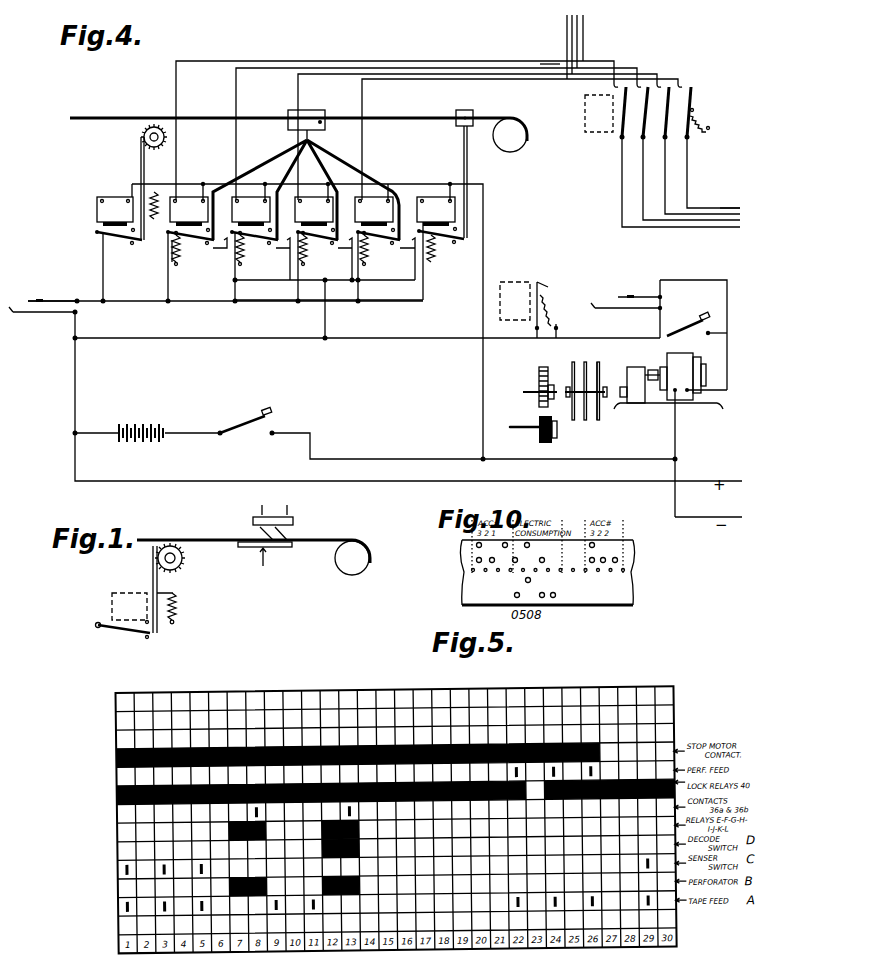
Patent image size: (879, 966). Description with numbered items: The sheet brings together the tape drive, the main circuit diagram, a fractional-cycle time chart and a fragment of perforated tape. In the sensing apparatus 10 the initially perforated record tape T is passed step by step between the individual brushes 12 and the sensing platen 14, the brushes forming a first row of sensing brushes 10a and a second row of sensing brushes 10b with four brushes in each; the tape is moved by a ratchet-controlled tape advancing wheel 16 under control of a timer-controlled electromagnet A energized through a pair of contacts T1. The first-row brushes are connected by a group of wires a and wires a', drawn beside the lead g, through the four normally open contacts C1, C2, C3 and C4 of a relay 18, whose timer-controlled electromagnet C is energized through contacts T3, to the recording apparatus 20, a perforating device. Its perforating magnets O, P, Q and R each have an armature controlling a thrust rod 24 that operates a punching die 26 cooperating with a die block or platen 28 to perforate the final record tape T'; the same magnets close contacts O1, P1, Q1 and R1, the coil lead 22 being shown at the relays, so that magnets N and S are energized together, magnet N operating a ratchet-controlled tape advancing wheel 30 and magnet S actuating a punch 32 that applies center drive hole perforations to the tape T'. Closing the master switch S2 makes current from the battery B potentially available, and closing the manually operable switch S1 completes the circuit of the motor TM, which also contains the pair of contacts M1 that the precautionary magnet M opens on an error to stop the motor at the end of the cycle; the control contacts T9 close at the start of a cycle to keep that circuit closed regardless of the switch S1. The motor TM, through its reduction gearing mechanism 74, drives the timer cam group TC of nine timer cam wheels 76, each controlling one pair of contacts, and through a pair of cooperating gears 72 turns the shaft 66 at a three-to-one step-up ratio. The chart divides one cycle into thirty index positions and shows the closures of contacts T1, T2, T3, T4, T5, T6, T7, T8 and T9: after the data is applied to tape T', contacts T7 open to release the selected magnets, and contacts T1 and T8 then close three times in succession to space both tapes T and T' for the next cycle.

In FIG. 4, the final record tape T' is at (298, 125).
In FIG. 4, the ratchet-controlled tape advancing wheel 30 is at (141, 135).
In FIG. 4, the die block or platen 28 is at (320, 113).
In FIG. 4, the punching die 26 is at (320, 127).
In FIG. 4, the thrust rod 24 is at (335, 160).
In FIG. 4, the punch 32 is at (467, 146).
In FIG. 4, the cable bundle g is at (583, 53).
In FIG. 4, the wires a' is at (539, 50).
In FIG. 4, the group of wires a is at (720, 228).
In FIG. 4, the timer-controlled electromagnet C is at (599, 113).
In FIG. 4, the relay 18 is at (610, 148).
In FIG. 4, the normally open contact C1 is at (680, 157).
In FIG. 4, the normally open contact C2 is at (691, 153).
In FIG. 4, the normally open contact C3 is at (702, 150).
In FIG. 4, the normally open contact C4 is at (713, 147).
In FIG. 4, the magnet N is at (126, 246).
In FIG. 4, the perforating magnet O is at (196, 248).
In FIG. 4, the perforating magnet P is at (260, 248).
In FIG. 4, the perforating magnet Q is at (323, 248).
In FIG. 4, the perforating magnet R is at (385, 248).
In FIG. 4, the magnet S is at (440, 248).
In FIG. 4, the contacts O1 is at (186, 249).
In FIG. 4, the contacts P1 is at (249, 249).
In FIG. 4, the contacts Q1 is at (312, 249).
In FIG. 4, the contacts R1 is at (374, 249).
In FIG. 4, the relay coil lead 22 is at (173, 244).
In FIG. 4, the recording apparatus 20 is at (373, 317).
In FIG. 4, the pair of contacts T8 is at (43, 299).
In FIG. 5, the pair of contacts T8 is at (323, 774).
In FIG. 4, the pair of control contacts T9 is at (626, 295).
In FIG. 5, the pair of control contacts T9 is at (328, 755).
In FIG. 4, the battery B is at (147, 448).
In FIG. 4, the master switch S2 is at (447, 433).
In FIG. 4, the manually operable switch S1 is at (697, 317).
In FIG. 4, the magnet M is at (515, 301).
In FIG. 4, the pair of contacts M1 is at (558, 310).
In FIG. 4, the timing cam assembly TC is at (578, 362).
In FIG. 4, the timer cam wheels 76 is at (600, 422).
In FIG. 4, the pair of cooperating gears 72 is at (554, 441).
In FIG. 4, the horizontal shaft 66 is at (520, 433).
In FIG. 4, the motor TM is at (670, 435).
In FIG. 4, the reduction gearing mechanism 74 is at (639, 395).
In FIG. 1, the initially perforated record tape T is at (253, 549).
In FIG. 1, the ratchet-controlled tape advancing wheel 16 is at (184, 566).
In FIG. 1, the timer-controlled electromagnet A is at (136, 616).
In FIG. 1, the sensing brushes 12 is at (308, 512).
In FIG. 1, the sensing brushes 10a is at (248, 537).
In FIG. 1, the sensing brushes 10b is at (295, 537).
In FIG. 1, the sensing platen 14 is at (290, 547).
In FIG. 1, the sensing apparatus 10 is at (293, 598).
In FIG. 5, the pair of contacts T1 is at (353, 904).
In FIG. 5, the pair of contacts T2 is at (208, 887).
In FIG. 5, the pair of contacts T3 is at (352, 867).
In FIG. 5, the timing row T4 is at (208, 850).
In FIG. 5, the timing row T5 is at (208, 831).
In FIG. 5, the timing row T6 is at (202, 813).
In FIG. 5, the pair of contacts T7 is at (365, 792).